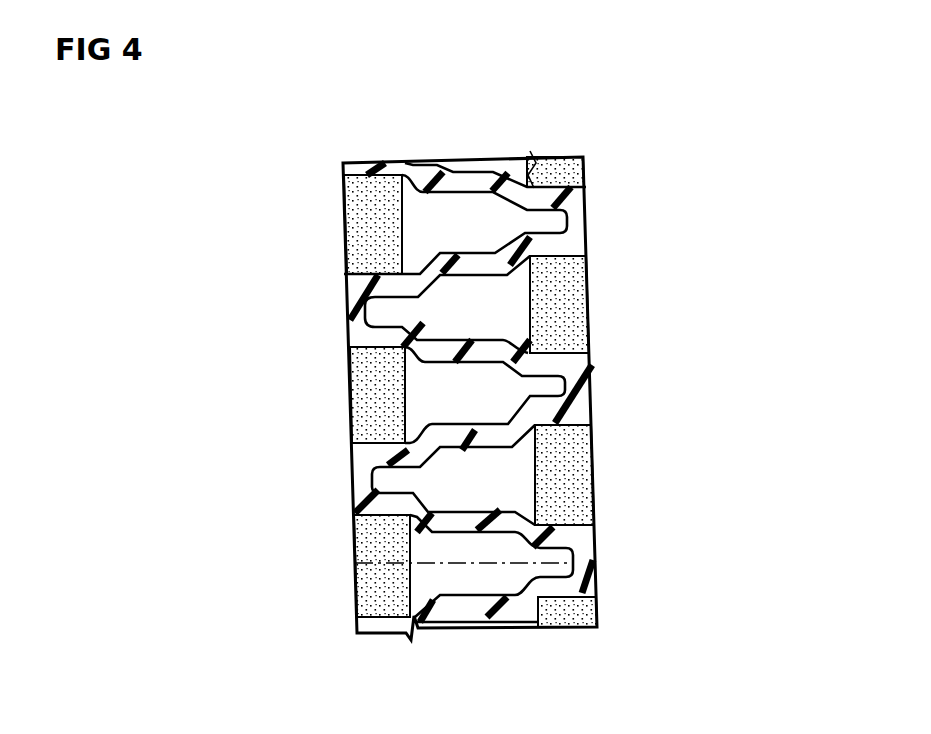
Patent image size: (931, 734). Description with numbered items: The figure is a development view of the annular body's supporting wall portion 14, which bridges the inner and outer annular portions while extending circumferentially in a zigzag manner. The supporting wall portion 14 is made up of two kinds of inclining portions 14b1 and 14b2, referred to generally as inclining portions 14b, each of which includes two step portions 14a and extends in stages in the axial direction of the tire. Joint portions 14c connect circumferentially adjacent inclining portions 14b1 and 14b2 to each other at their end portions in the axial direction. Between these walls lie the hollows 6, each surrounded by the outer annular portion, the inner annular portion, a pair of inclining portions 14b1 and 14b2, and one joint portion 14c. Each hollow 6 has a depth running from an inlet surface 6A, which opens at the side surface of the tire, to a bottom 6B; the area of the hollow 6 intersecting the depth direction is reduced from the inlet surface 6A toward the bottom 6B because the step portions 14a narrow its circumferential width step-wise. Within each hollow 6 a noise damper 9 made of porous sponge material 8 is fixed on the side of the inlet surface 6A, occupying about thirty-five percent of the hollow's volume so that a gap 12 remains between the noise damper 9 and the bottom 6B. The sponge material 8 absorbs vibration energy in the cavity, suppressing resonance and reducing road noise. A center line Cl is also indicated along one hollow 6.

The noise damper 9 is at (363, 197).
The porous sponge material 8 is at (393, 391).
The gap 12 is at (458, 220).
The hollow 6 is at (436, 392).
The inlet surface 6A is at (347, 215).
The bottom 6B is at (558, 215).
The supporting wall portion 14 is at (434, 392).
The step portion 14a is at (417, 350).
The inclining portion 14b is at (434, 392).
The first inclining portion 14b1 is at (450, 264).
The second inclining portion 14b2 is at (463, 351).
The joint portion 14c is at (583, 407).
The center line Cl is at (470, 563).